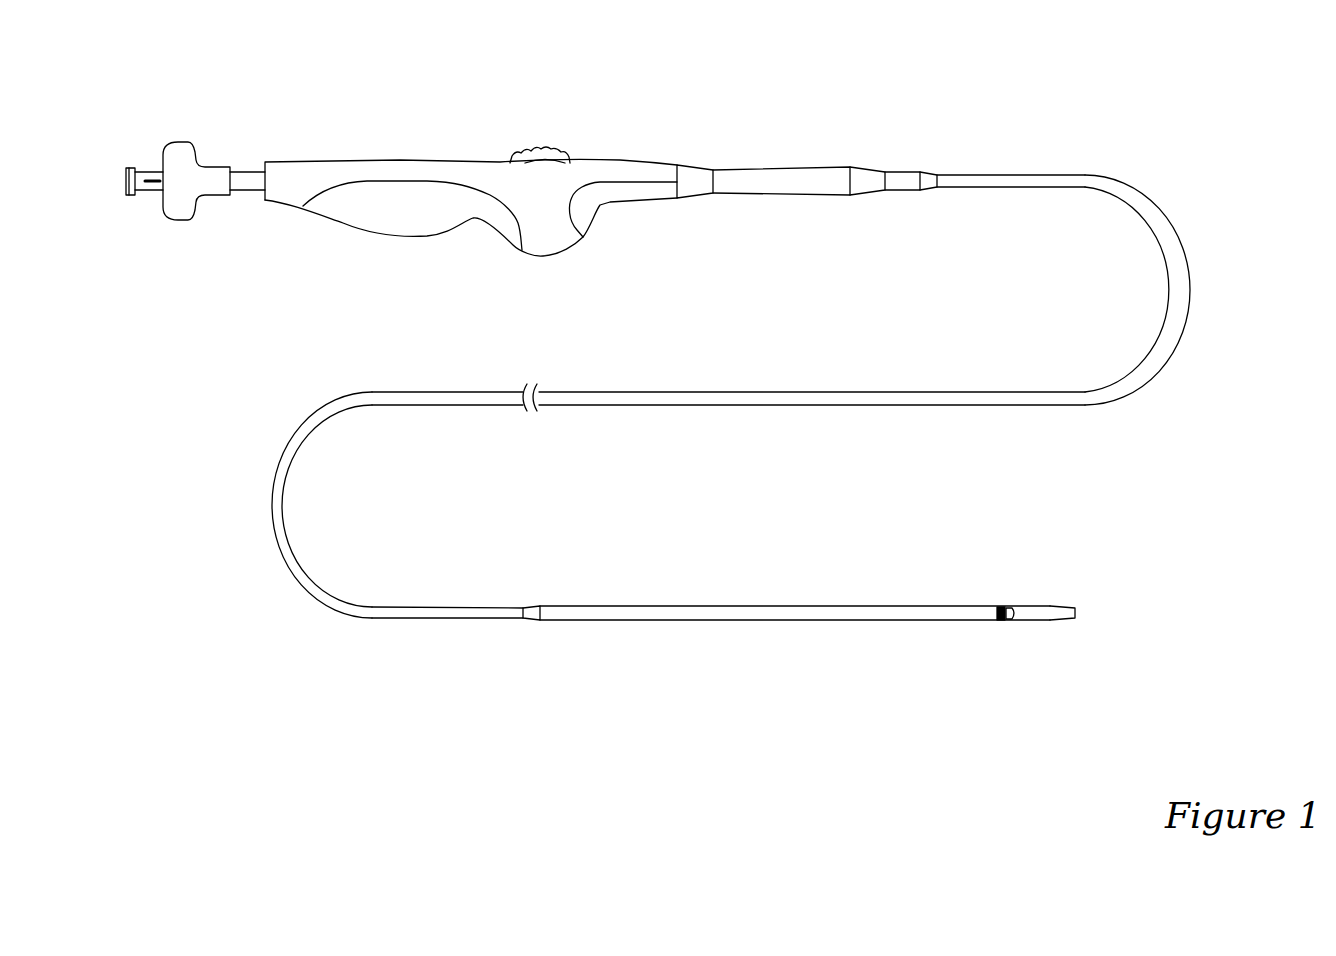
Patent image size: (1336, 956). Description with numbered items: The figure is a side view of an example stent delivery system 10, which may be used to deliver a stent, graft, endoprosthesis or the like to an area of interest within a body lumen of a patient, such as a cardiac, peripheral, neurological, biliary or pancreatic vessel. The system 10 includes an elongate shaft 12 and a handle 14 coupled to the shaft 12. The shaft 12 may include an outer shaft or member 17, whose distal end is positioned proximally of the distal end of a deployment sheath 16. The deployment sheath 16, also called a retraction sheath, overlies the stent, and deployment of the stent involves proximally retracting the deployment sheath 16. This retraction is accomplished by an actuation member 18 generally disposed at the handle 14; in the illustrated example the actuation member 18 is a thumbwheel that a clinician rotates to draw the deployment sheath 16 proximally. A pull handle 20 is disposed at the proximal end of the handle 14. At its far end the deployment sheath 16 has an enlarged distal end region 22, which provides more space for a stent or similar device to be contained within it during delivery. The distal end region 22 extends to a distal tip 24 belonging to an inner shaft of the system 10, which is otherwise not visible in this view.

The stent delivery system 10 is at (690, 96).
The elongate shaft 12 is at (1167, 209).
The handle 14 is at (343, 138).
The deployment sheath 16 is at (298, 435).
The outer shaft 17 is at (1190, 300).
The actuation member 18 is at (540, 148).
The pull handle 20 is at (155, 147).
The enlarged distal end region 22 is at (772, 613).
The distal tip 24 is at (1045, 614).